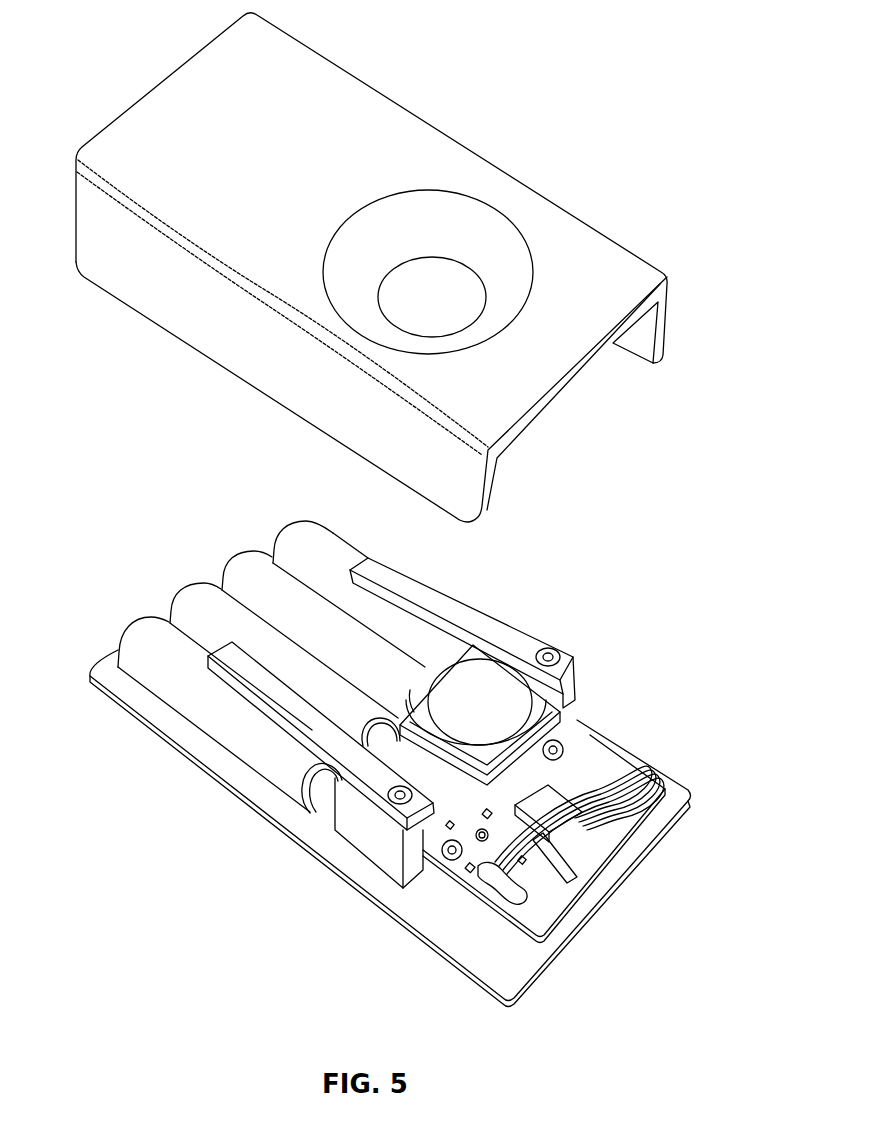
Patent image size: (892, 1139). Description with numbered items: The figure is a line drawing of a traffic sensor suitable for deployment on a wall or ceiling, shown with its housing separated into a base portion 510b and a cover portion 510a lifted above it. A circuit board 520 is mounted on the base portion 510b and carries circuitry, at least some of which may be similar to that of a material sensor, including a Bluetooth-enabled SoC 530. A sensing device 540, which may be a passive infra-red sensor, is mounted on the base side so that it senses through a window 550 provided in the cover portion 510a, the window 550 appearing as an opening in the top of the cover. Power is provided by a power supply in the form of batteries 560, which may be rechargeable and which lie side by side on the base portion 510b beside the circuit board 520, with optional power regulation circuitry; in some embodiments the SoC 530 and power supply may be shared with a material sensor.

The cover portion 510a is at (635, 258).
The base portion 510b is at (678, 790).
The circuit board 520 is at (557, 900).
The Bluetooth-enabled SoC 530 is at (556, 832).
The sensing device 540 is at (500, 677).
The window 550 is at (438, 285).
The batteries 560 is at (230, 567).